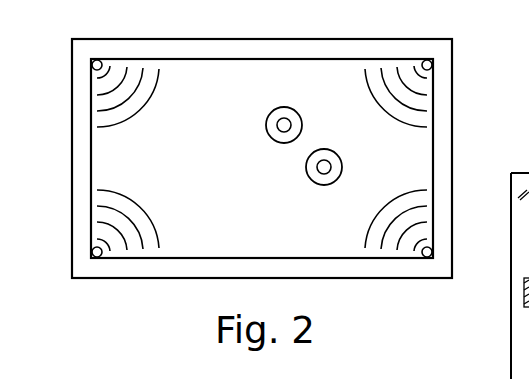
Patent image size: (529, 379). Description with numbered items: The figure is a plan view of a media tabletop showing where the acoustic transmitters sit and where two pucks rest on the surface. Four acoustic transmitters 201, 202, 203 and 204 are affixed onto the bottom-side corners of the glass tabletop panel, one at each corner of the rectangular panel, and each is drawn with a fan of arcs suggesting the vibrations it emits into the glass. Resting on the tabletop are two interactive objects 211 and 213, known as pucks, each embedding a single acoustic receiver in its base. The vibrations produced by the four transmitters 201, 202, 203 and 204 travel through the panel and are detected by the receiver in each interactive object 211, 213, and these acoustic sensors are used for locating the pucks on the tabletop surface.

The acoustic transmitter 201 is at (92, 255).
The acoustic transmitter 202 is at (92, 67).
The acoustic transmitter 203 is at (432, 68).
The acoustic transmitter 204 is at (421, 256).
The interactive object 211 is at (268, 133).
The interactive object 213 is at (307, 168).